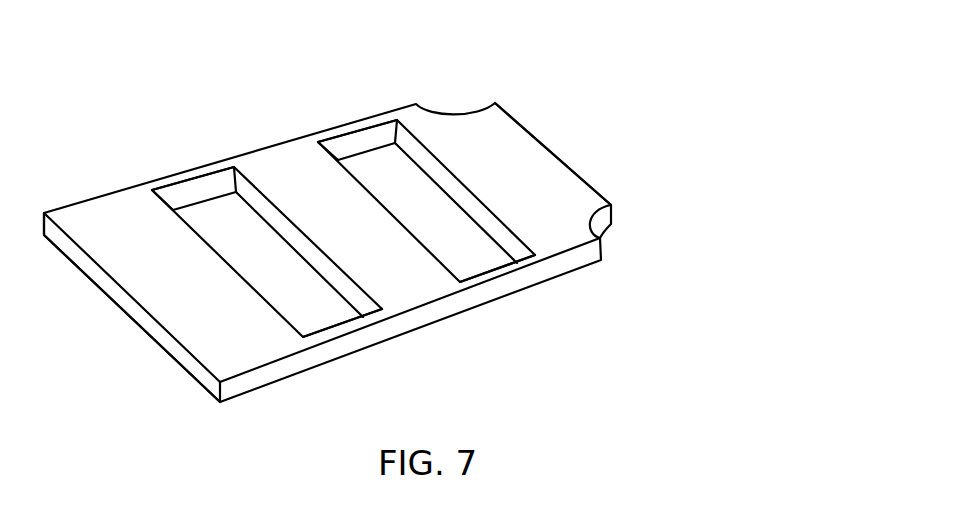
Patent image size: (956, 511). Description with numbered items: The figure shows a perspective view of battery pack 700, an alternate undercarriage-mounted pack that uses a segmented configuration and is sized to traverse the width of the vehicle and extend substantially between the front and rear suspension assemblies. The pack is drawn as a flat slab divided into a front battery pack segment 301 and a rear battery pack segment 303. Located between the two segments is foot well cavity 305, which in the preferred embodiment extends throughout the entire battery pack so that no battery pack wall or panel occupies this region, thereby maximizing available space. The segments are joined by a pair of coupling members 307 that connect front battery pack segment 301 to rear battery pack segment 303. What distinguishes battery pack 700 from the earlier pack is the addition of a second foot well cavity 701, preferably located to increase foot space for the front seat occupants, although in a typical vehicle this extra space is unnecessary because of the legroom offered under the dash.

The battery pack 700 is at (556, 74).
The second foot well cavity 701 is at (385, 158).
The front battery pack segment 301 is at (527, 179).
The rear battery pack segment 303 is at (212, 300).
The foot well cavity 305 is at (228, 192).
The coupling members 307 is at (187, 173).